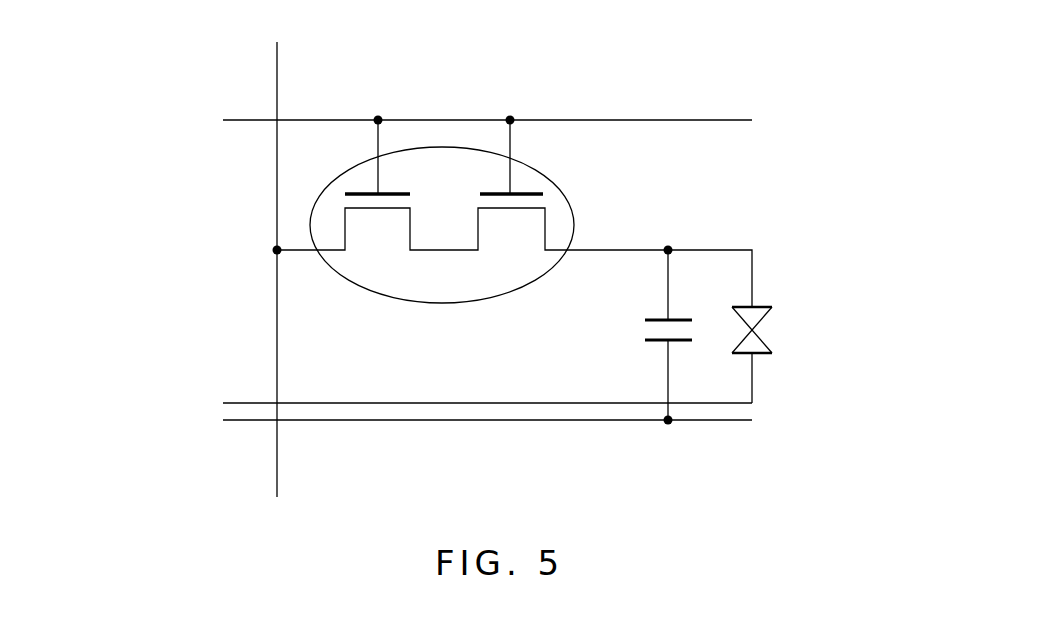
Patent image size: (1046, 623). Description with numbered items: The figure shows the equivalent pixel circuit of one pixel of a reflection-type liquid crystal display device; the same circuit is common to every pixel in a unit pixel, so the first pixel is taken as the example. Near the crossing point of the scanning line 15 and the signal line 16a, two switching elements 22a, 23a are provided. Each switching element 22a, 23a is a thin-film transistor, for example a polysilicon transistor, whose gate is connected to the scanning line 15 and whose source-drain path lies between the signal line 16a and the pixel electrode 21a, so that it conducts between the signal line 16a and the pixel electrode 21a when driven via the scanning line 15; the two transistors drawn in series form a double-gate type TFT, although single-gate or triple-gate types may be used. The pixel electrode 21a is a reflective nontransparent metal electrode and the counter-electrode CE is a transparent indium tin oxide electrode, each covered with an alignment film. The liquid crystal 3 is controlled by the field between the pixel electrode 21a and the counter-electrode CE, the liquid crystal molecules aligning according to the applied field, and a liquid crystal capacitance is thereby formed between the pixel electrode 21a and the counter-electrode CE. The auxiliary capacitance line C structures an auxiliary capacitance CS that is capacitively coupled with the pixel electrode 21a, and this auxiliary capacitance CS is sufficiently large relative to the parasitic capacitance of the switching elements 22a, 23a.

The signal line 16a is at (277, 70).
The scanning line 15 is at (245, 121).
The switching element 22a is at (360, 188).
The switching element 23a is at (538, 186).
The pixel electrode 21a is at (685, 232).
The liquid crystal 3 is at (762, 322).
The auxiliary capacitance CS is at (642, 327).
The counter-electrode CE is at (250, 402).
The auxiliary capacitance line C is at (621, 421).